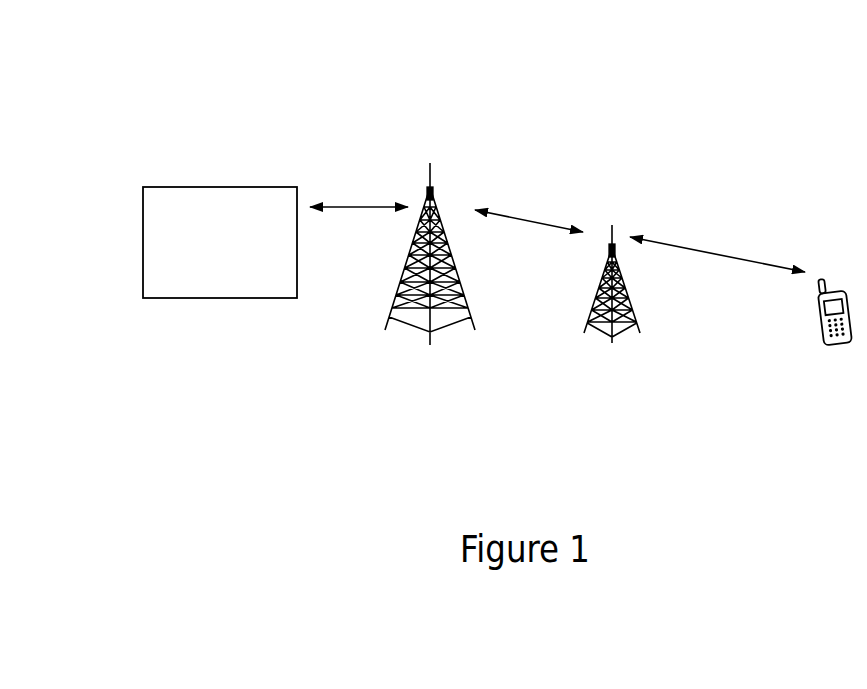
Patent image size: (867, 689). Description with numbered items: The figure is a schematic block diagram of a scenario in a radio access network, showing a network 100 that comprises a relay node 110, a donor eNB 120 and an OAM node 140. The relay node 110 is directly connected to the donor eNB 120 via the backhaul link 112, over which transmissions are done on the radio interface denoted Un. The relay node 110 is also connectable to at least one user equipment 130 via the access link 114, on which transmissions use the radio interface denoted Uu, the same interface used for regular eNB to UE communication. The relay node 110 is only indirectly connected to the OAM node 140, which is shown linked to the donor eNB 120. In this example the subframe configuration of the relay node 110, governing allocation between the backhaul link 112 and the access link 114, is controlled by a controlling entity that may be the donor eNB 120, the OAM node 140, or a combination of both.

The network 100 is at (600, 100).
The relay node 110 is at (612, 228).
The backhaul link 112 is at (503, 207).
The access link 114 is at (665, 233).
The donor eNB 120 is at (421, 168).
The user equipment 130 is at (820, 325).
The OAM node 140 is at (221, 187).